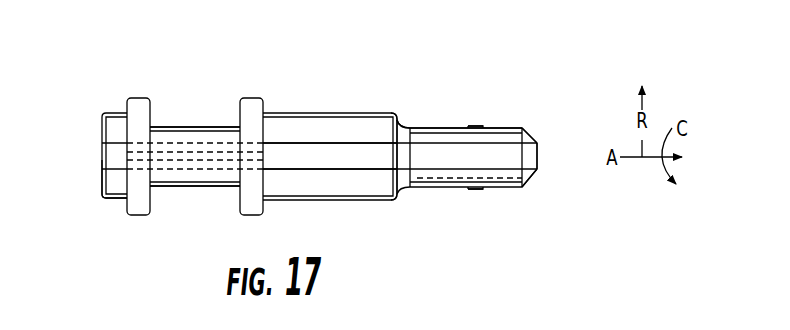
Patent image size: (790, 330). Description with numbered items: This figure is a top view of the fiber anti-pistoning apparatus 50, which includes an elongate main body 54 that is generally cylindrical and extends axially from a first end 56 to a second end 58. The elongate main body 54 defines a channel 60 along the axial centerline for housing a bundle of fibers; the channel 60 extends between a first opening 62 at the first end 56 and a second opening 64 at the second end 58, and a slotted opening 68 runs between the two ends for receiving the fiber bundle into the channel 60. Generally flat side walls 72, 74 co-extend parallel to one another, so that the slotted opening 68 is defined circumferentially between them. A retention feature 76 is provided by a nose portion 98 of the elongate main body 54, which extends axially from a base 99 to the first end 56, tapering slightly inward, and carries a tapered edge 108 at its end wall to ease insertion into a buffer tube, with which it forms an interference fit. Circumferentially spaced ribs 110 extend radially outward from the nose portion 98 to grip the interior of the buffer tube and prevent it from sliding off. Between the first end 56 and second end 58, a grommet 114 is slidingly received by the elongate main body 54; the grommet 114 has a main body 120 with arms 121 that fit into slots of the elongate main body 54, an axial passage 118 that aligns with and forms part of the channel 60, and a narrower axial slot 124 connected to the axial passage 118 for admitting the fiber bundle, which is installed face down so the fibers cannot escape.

The fiber anti-pistoning apparatus 50 is at (190, 52).
The elongate main body 54 is at (325, 192).
The first end 56 is at (540, 135).
The second end 58 is at (105, 188).
The channel 60 is at (347, 140).
The first opening 62 is at (541, 155).
The second opening 64 is at (100, 149).
The slotted opening 68 is at (290, 140).
The side wall 72 is at (375, 138).
The side wall 74 is at (372, 183).
The retention feature 76 is at (524, 94).
The nose portion 98 is at (444, 178).
The base 99 is at (402, 128).
The tapered edge 108 is at (530, 188).
The ribs 110 is at (477, 128).
The grommet 114 is at (208, 128).
The axial passage 118 is at (168, 128).
The main body 120 is at (172, 187).
The arms 121 is at (138, 98).
The axial slot 124 is at (250, 145).